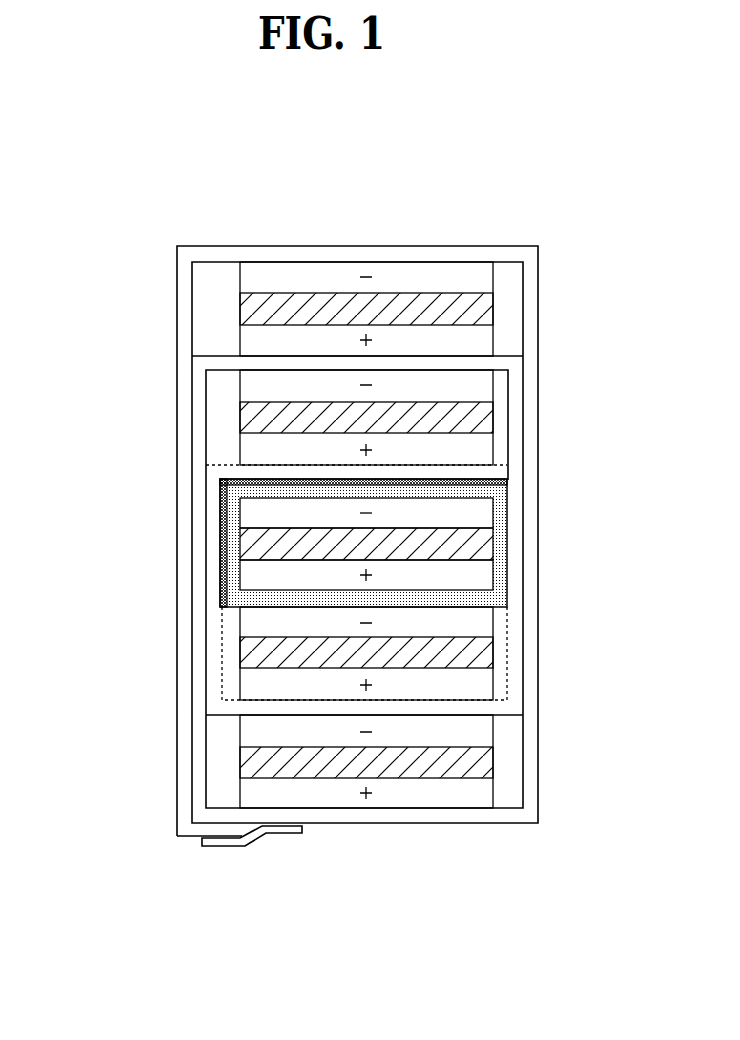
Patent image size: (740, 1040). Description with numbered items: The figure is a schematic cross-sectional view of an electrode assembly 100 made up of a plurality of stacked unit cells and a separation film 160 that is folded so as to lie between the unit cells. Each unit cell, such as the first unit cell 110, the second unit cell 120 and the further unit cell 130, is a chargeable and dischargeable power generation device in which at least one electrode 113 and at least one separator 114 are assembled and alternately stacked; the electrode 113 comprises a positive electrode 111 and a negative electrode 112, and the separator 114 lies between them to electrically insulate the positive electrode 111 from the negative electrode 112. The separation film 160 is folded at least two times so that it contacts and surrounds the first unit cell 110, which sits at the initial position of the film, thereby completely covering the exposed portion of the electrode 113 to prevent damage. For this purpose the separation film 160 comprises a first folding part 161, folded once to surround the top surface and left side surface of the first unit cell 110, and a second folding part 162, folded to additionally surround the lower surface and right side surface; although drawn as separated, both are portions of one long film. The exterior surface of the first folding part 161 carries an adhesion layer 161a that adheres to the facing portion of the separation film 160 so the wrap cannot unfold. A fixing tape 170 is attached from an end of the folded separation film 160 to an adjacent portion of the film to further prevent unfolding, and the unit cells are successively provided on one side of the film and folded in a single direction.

The electrode assembly 100 is at (623, 163).
The first unit cell 110 is at (506, 544).
The positive electrode 111 is at (240, 573).
The negative electrode 112 is at (247, 517).
The electrode 113 is at (100, 566).
The separator 114 is at (282, 549).
The second unit cell 120 is at (506, 654).
The unit cell 130 is at (505, 386).
The separation film 160 is at (546, 766).
The first folding part 161 is at (495, 490).
The adhesion layer 161a is at (222, 500).
The second folding part 162 is at (502, 583).
The fixing tape 170 is at (282, 834).